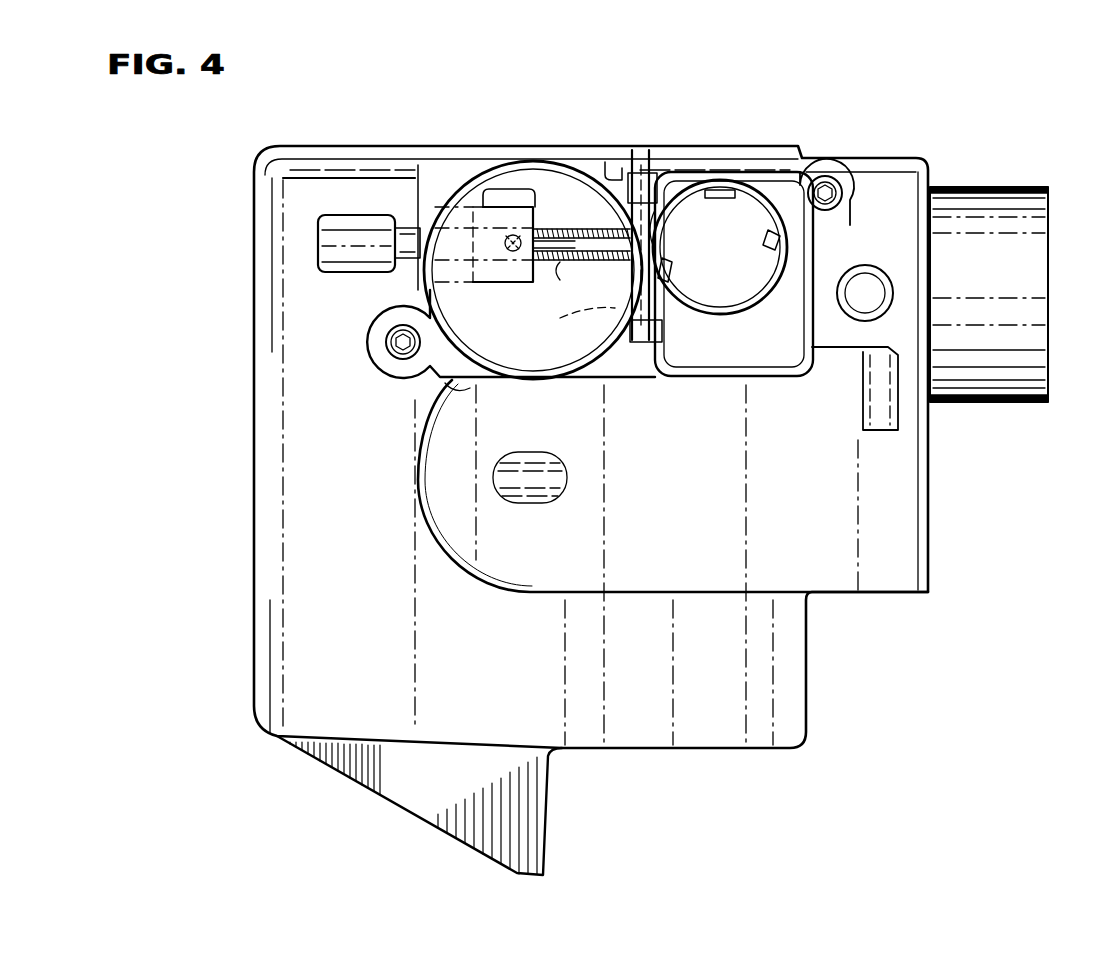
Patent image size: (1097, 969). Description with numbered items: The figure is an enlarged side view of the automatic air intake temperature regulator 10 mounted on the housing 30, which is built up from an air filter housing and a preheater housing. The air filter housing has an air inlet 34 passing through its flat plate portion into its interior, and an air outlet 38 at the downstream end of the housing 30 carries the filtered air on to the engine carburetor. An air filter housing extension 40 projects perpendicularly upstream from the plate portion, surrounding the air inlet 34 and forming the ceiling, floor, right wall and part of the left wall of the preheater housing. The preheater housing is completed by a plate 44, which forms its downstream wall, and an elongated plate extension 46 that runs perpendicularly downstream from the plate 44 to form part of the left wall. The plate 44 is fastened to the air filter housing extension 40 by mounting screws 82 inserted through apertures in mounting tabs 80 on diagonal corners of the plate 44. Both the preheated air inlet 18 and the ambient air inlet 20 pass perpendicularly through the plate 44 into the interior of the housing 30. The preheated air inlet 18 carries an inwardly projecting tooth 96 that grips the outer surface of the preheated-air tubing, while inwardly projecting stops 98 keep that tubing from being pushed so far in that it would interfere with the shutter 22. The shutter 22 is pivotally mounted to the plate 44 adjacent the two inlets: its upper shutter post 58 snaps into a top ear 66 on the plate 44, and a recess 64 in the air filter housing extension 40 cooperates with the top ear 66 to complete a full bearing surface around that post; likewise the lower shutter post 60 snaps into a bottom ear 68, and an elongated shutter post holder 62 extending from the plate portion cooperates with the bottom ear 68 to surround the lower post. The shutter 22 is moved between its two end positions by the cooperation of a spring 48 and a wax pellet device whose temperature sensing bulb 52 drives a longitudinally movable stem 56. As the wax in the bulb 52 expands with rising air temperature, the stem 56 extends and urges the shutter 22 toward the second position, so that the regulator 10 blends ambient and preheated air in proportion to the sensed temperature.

The automatic air intake temperature regulator 10 is at (232, 146).
The preheated air inlet 18 is at (798, 263).
The ambient air inlet 20 is at (430, 370).
The shutter 22 is at (738, 150).
The housing 30 is at (247, 306).
The air inlet 34 is at (712, 368).
The air outlet 38 is at (995, 186).
The air filter housing extension 40 is at (422, 297).
The plate 44 is at (806, 242).
The plate extension 46 is at (485, 230).
The spring 48 is at (588, 228).
The temperature sensing bulb 52 is at (344, 208).
The stem 56 is at (560, 280).
The upper shutter post 58 is at (645, 160).
The lower shutter post 60 is at (600, 383).
The shutter post holder 62 is at (612, 338).
The recess 64 is at (666, 170).
The top ear 66 is at (618, 150).
The bottom ear 68 is at (567, 321).
The mounting tabs 80 is at (850, 192).
The mounting screws 82 is at (842, 182).
The inwardly projecting tooth 96 is at (722, 200).
The inwardly projecting stops 98 is at (670, 275).